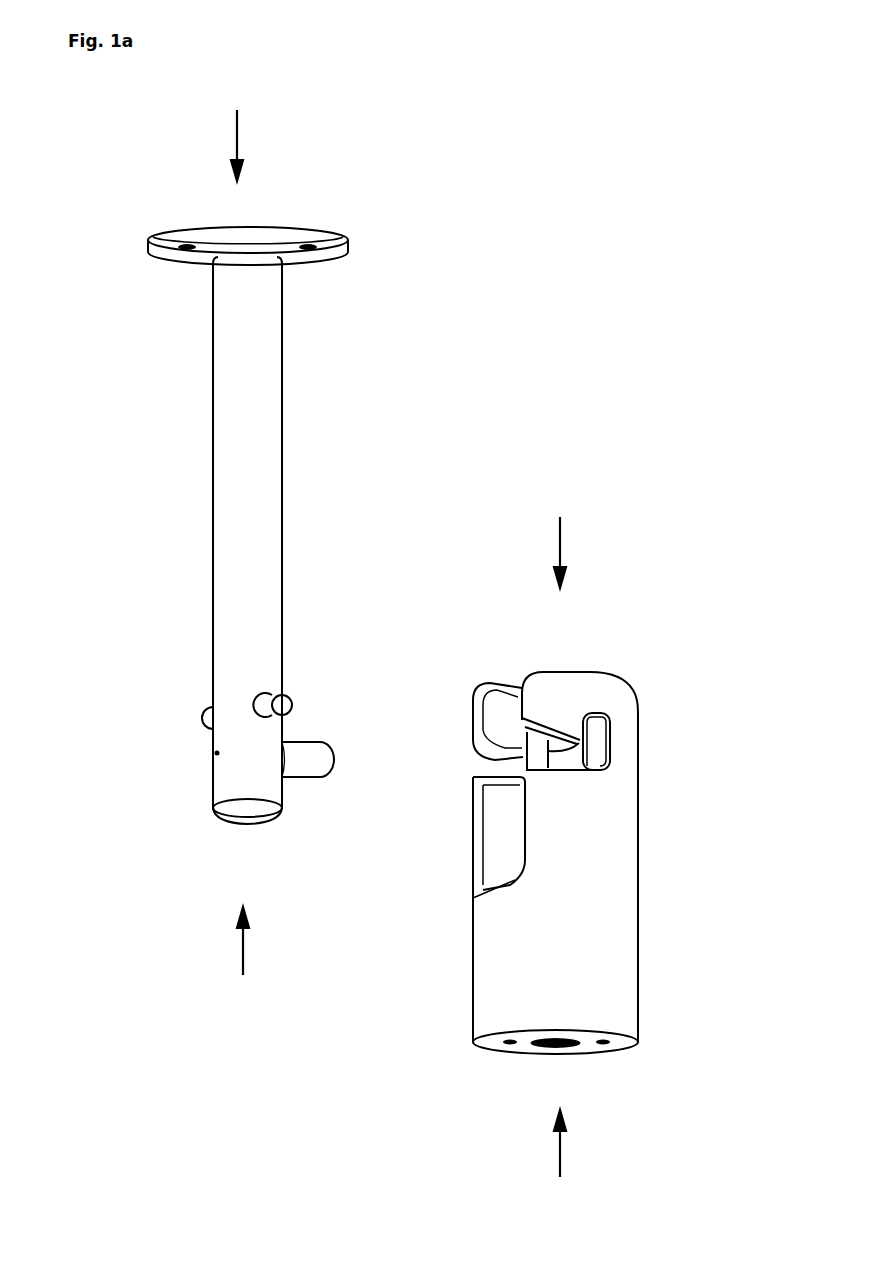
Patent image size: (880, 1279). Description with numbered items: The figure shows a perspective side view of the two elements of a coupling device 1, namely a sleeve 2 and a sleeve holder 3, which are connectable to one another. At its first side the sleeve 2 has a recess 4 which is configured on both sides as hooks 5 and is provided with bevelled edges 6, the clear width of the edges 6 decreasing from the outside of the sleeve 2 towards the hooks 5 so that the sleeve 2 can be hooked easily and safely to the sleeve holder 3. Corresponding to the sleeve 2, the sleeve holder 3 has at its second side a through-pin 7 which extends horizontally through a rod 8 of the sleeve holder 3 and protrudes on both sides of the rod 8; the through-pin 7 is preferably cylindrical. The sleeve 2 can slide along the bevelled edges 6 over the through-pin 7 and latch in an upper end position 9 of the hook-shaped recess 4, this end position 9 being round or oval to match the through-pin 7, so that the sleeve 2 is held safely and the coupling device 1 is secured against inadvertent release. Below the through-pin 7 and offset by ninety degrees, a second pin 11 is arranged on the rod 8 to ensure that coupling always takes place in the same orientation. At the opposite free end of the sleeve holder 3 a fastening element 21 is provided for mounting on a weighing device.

The coupling device 1 is at (648, 202).
The sleeve 2 is at (752, 880).
The sleeve holder 3 is at (90, 474).
The recess 4 is at (507, 790).
The hooks 5 is at (557, 700).
The bevelled edges 6 is at (522, 757).
The through-pin 7 is at (198, 711).
The rod 8 is at (267, 450).
The upper end position 9 is at (601, 712).
The second pin 11 is at (331, 763).
The fastening element 21 is at (337, 244).